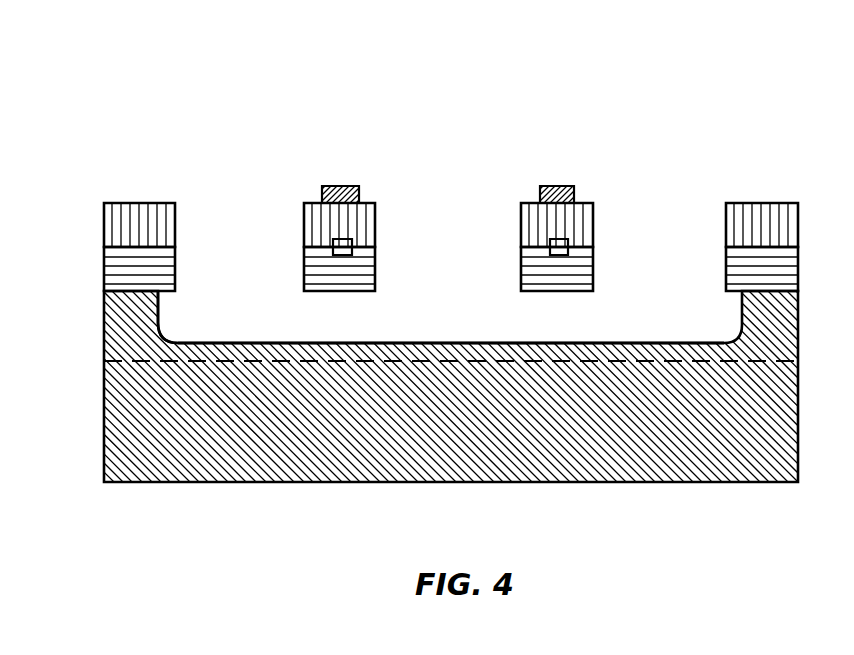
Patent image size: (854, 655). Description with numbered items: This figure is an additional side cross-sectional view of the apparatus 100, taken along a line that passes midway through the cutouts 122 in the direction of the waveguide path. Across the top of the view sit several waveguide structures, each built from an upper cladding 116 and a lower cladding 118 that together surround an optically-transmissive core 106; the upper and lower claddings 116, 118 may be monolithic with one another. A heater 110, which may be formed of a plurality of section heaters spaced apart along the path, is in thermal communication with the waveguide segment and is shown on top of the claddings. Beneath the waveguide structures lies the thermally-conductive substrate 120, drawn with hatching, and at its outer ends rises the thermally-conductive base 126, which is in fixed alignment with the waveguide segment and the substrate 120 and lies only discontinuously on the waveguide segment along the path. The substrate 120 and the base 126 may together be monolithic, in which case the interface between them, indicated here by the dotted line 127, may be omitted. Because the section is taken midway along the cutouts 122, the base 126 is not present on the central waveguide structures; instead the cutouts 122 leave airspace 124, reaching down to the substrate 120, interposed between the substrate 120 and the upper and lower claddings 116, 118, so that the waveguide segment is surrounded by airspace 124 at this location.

The apparatus 100 is at (690, 125).
The optically-transmissive core 106 is at (352, 243).
The heater 110 is at (555, 187).
The upper cladding 116 is at (130, 220).
The lower cladding 118 is at (120, 273).
The thermally-conductive substrate 120 is at (458, 426).
The cutouts 122 is at (458, 321).
The airspace 124 is at (229, 257).
The thermally-conductive base 126 is at (155, 340).
The dotted line 127 is at (602, 361).